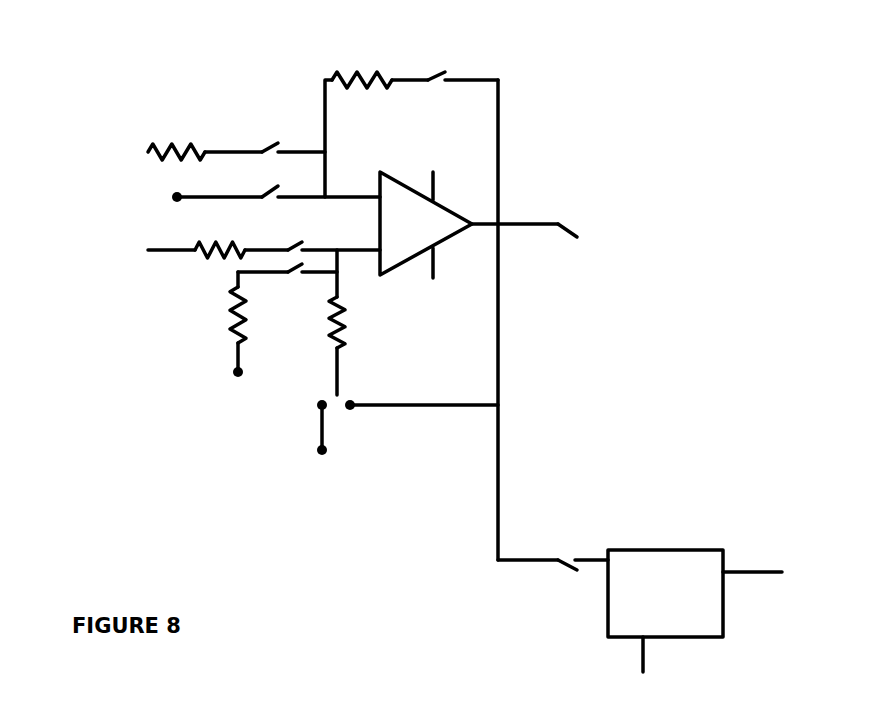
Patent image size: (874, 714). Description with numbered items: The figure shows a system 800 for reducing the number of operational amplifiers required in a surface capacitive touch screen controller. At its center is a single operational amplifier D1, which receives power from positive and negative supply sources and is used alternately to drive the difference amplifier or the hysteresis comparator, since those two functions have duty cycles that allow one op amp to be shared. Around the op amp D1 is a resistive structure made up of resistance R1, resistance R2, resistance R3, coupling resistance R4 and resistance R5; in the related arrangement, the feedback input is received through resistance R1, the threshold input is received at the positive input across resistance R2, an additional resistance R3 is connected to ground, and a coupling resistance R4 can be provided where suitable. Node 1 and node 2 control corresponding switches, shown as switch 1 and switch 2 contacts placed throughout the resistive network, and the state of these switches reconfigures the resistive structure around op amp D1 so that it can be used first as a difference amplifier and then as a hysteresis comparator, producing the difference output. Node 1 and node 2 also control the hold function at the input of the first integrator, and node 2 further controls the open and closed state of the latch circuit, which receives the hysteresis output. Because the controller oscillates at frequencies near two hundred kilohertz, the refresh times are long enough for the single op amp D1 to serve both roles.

The system 800 is at (437, 347).
The switch 1 / node 1 is at (428, 219).
The switch 2 / node 2 is at (479, 421).
The resistance R1 is at (218, 236).
The resistance R2 is at (176, 134).
The resistance R3 is at (217, 315).
The coupling resistance R4 is at (362, 53).
The resistor R5 is at (355, 327).
The operational amplifier D1 is at (426, 225).